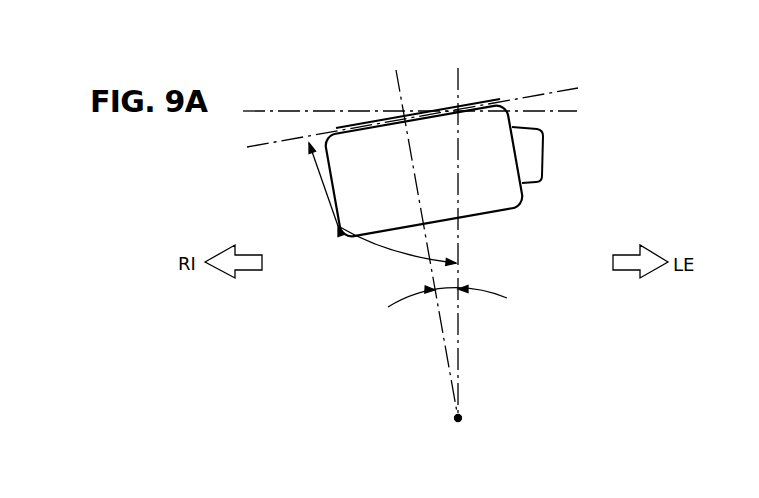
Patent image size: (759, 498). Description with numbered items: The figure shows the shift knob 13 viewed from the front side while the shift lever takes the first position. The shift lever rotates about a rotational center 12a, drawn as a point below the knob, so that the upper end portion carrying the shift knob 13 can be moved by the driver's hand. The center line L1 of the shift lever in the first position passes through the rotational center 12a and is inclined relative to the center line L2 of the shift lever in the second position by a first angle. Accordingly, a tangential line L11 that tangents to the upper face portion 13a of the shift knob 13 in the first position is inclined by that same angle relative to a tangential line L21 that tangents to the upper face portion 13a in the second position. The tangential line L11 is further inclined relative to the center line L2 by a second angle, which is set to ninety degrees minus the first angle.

The shift knob 13 is at (498, 153).
The upper face portion 13a is at (414, 114).
The rotational center 12a is at (467, 413).
The center line L1 is at (410, 177).
The center line L2 is at (462, 185).
The tangential line L11 is at (257, 146).
The tangential line L21 is at (317, 112).